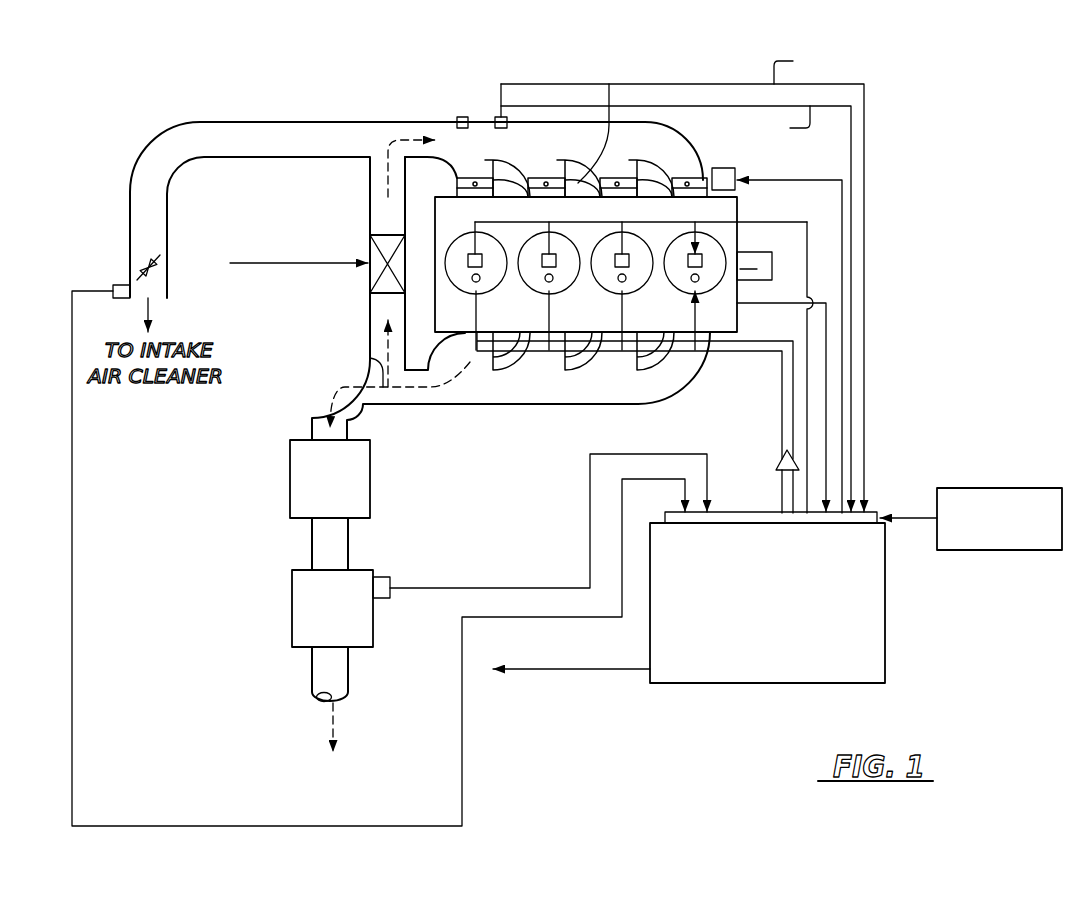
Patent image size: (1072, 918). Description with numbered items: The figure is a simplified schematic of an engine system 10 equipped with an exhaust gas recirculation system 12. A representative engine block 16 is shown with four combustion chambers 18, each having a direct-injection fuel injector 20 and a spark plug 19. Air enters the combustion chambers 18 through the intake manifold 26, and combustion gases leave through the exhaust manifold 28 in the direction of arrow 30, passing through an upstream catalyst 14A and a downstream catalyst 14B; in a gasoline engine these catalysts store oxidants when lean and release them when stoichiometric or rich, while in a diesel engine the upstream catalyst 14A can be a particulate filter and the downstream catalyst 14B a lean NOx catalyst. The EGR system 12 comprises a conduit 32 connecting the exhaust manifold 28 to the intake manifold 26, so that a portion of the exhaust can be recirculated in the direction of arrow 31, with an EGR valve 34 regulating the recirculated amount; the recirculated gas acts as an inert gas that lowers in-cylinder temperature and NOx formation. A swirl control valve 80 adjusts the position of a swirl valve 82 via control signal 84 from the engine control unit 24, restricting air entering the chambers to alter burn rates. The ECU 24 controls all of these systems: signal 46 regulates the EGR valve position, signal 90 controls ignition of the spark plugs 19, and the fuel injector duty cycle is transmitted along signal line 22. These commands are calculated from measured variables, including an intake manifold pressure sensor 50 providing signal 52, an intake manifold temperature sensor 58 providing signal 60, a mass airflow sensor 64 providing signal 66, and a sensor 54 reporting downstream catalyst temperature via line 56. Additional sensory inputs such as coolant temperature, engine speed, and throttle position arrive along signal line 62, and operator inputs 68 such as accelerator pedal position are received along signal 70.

The engine system 10 is at (946, 234).
The exhaust gas recirculation (EGR) system 12 is at (356, 285).
The upstream catalyst 14A is at (302, 437).
The downstream catalyst 14B is at (292, 605).
The engine block 16 is at (735, 210).
The combustion chambers 18 is at (693, 223).
The spark plugs 19 is at (542, 258).
The direct-injection fuel injector 20 is at (691, 279).
The signal line 22 is at (782, 418).
The engine control unit (ECU) 24 is at (887, 590).
The intake manifold 26 is at (680, 130).
The exhaust manifold 28 is at (697, 377).
The arrow 30 is at (368, 360).
The arrow 31 is at (383, 337).
The conduit 32 is at (369, 175).
The EGR valve 34 is at (369, 243).
The signal 46 is at (282, 264).
The intake manifold pressure (MAP) sensor 50 is at (460, 116).
The signal (Pl) 52 is at (853, 130).
The sensor 54 is at (382, 577).
The line 56 is at (588, 503).
The intake manifold temperature sensor 58 is at (495, 117).
The signal (Tm, TEMP) 60 is at (865, 197).
The signal line 62 is at (828, 360).
The mass airflow (MAF) sensor 64 is at (113, 285).
The signal (Wth) 66 is at (540, 617).
The operator inputs 68 is at (997, 488).
The signal 70 is at (910, 517).
The swirl control valve 80 is at (722, 168).
The swirl valve 82 is at (609, 84).
The control signal 84 is at (787, 180).
The signal 90 is at (807, 248).